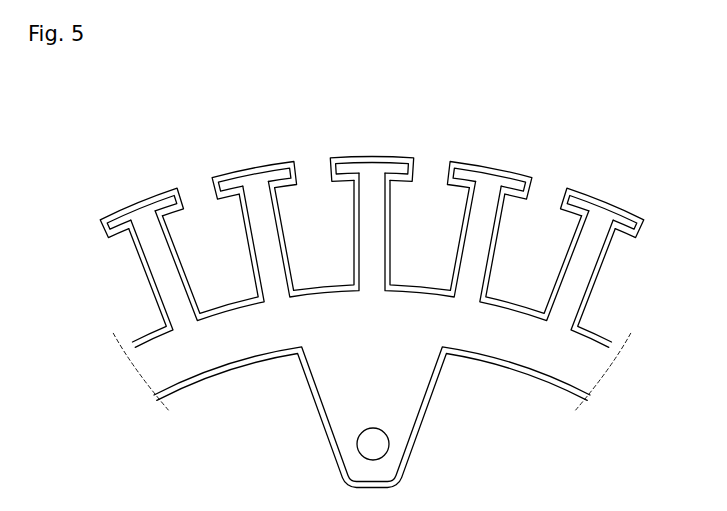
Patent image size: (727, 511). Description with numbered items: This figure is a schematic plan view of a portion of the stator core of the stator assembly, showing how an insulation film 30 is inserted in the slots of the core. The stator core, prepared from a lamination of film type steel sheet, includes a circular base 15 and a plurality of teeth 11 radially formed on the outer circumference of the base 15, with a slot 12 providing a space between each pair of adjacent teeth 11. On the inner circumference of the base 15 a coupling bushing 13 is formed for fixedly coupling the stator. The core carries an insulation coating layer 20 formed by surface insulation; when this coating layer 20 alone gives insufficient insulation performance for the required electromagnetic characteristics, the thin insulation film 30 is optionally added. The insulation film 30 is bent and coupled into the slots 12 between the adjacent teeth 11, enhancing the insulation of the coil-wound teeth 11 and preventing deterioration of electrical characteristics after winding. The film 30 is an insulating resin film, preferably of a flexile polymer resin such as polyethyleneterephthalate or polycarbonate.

The teeth 11 is at (137, 207).
The slot 12 is at (430, 200).
The coupling bushing 13 is at (402, 429).
The base 15 is at (590, 370).
The insulation coating layer 20 is at (157, 195).
The insulation film 30 is at (135, 268).